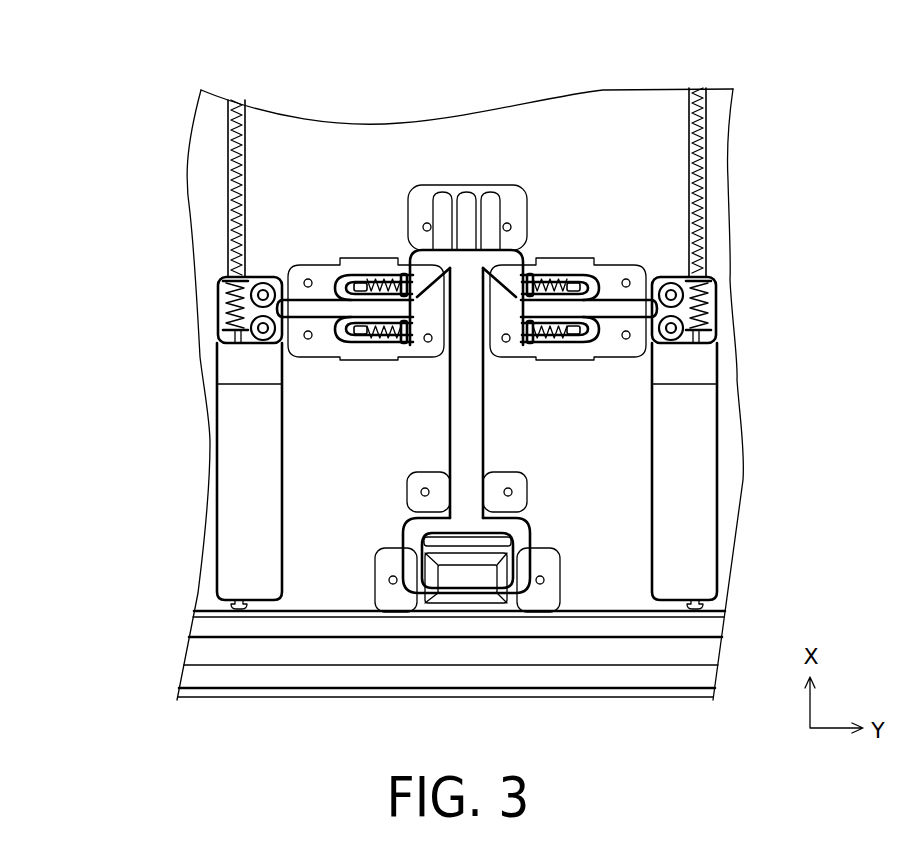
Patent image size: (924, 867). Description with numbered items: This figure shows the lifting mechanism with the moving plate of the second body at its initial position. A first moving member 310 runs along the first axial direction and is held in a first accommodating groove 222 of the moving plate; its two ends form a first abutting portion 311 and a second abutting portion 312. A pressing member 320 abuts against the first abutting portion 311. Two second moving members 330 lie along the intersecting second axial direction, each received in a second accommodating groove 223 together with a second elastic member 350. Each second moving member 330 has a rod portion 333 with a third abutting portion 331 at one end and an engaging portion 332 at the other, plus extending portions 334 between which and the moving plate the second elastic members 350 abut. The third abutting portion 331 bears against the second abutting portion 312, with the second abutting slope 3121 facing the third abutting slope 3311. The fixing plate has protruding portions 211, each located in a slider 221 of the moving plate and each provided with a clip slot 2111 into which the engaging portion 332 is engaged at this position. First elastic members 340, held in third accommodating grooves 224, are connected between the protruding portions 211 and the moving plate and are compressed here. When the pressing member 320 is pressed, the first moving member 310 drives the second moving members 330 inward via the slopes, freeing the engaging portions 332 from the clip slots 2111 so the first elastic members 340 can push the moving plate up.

The protruding portion 211 is at (683, 343).
The clip slot 2111 is at (700, 293).
The slider 221 is at (704, 522).
The first accommodating groove 222 is at (447, 381).
The second accommodating groove 223 is at (616, 296).
The third accommodating groove 224 is at (708, 165).
The first moving member 310 is at (467, 462).
The first abutting portion 311 is at (411, 591).
The second abutting portion 312 is at (457, 263).
The second abutting slope 3121 is at (506, 276).
The third abutting slope 3311 is at (462, 266).
The pressing member 320 is at (468, 583).
The second moving member 330 is at (826, 406).
The third abutting portion 331 is at (510, 308).
The engaging portion 332 is at (648, 298).
The rod portion 333 is at (620, 310).
The extending portion 334 is at (578, 345).
The first elastic member 340 is at (702, 88).
The second elastic member 350 is at (557, 346).